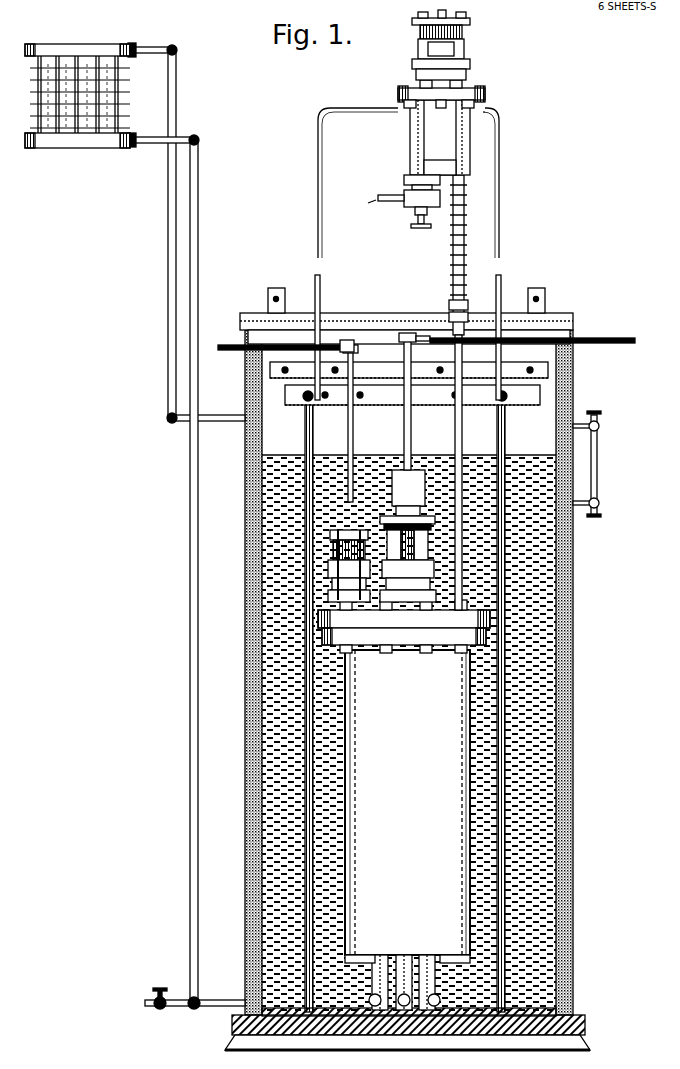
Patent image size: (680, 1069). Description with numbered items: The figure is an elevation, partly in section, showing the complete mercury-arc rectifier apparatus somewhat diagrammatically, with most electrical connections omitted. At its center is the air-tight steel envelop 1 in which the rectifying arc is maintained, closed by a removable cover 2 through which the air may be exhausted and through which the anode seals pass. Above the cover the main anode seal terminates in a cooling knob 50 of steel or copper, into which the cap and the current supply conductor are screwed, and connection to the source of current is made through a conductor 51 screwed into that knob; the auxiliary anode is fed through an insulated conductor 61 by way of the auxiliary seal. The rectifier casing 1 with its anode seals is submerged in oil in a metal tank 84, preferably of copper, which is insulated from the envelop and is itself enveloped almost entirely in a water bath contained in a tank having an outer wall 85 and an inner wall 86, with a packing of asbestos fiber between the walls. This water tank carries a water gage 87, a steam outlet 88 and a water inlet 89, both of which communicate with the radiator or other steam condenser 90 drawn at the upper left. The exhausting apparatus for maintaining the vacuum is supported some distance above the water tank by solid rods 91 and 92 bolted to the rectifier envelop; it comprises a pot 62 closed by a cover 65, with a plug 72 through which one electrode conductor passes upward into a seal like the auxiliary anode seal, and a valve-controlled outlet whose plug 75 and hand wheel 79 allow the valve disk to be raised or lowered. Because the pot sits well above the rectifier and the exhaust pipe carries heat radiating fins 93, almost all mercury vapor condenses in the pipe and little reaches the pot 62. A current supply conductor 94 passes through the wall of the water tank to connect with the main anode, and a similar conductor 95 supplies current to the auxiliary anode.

The metal envelop 1 is at (475, 812).
The removable cover 2 is at (510, 622).
The cooling knob 50 is at (400, 470).
The conductor 51 is at (412, 452).
The insulated conductor 61 is at (349, 450).
The pot 62 is at (410, 150).
The cover 65 is at (485, 97).
The plug 72 is at (470, 70).
The plug 75 is at (404, 180).
The hand wheel 79 is at (416, 226).
The metal tank 84 is at (505, 750).
The outer wall 85 is at (575, 652).
The inner wall 86 is at (572, 762).
The water gage 87 is at (597, 480).
The steam outlet 88 is at (165, 390).
The water inlet 89 is at (178, 1010).
The radiator 90 is at (88, 148).
The solid rod 91 is at (316, 242).
The solid rod 92 is at (501, 242).
The heat radiating fins 93 is at (452, 256).
The current supply conductor 94 is at (608, 338).
The conductor 95 is at (224, 344).